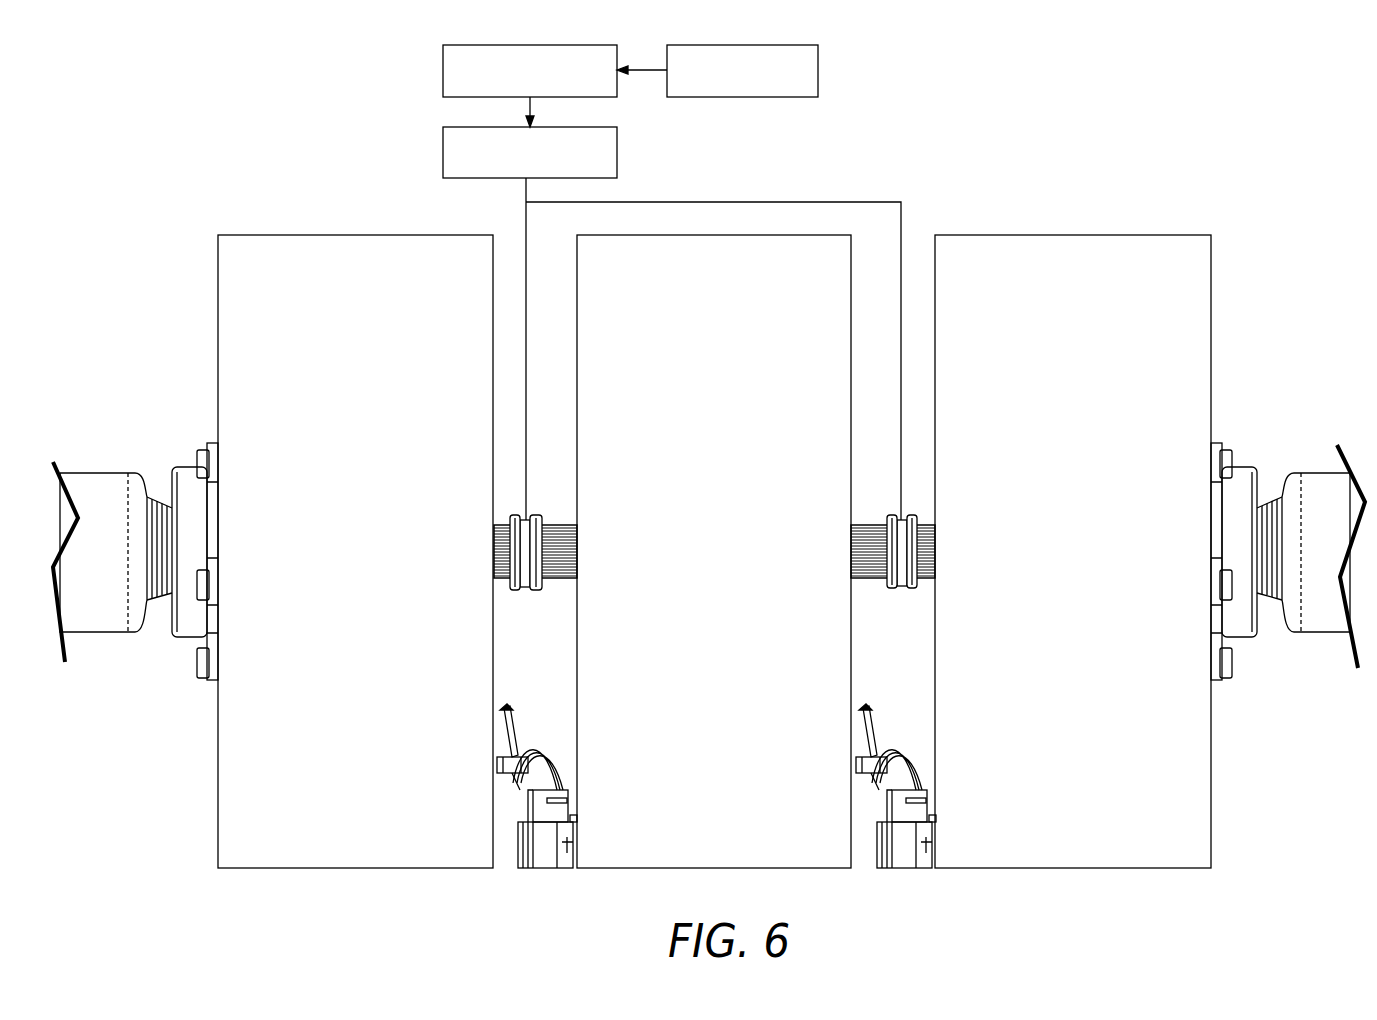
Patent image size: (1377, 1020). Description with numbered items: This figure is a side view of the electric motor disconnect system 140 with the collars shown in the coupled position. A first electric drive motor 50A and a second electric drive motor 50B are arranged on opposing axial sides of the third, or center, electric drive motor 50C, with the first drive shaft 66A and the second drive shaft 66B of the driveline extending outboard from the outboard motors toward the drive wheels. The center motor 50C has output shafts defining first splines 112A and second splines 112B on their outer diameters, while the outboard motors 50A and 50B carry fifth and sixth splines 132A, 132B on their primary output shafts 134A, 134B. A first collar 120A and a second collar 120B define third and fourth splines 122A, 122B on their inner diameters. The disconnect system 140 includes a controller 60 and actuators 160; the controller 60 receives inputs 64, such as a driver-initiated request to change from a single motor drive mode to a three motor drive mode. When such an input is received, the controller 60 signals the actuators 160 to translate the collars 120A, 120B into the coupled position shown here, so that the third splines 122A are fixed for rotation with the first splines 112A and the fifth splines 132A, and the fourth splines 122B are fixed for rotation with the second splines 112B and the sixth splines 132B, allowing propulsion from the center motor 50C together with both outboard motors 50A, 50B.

The electric motor disconnect system 140 is at (308, 138).
The controller 60 is at (443, 72).
The inputs 64 is at (818, 82).
The actuators 160 is at (617, 156).
The first electric drive motor 50A is at (373, 235).
The second electric drive motor 50B is at (1138, 235).
The third electric drive motor 50C is at (805, 870).
The first drive shaft 66A is at (92, 490).
The second drive shaft 66B is at (1318, 490).
The first splines 112A is at (568, 532).
The second splines 112B is at (857, 533).
The first collar 120A is at (453, 490).
The second collar 120B is at (939, 488).
The third splines 122A is at (562, 587).
The fourth splines 122B is at (893, 587).
The fifth splines 132A is at (510, 525).
The sixth splines 132B is at (920, 523).
The primary output shaft 134A is at (500, 548).
The primary output shaft 134B is at (927, 555).